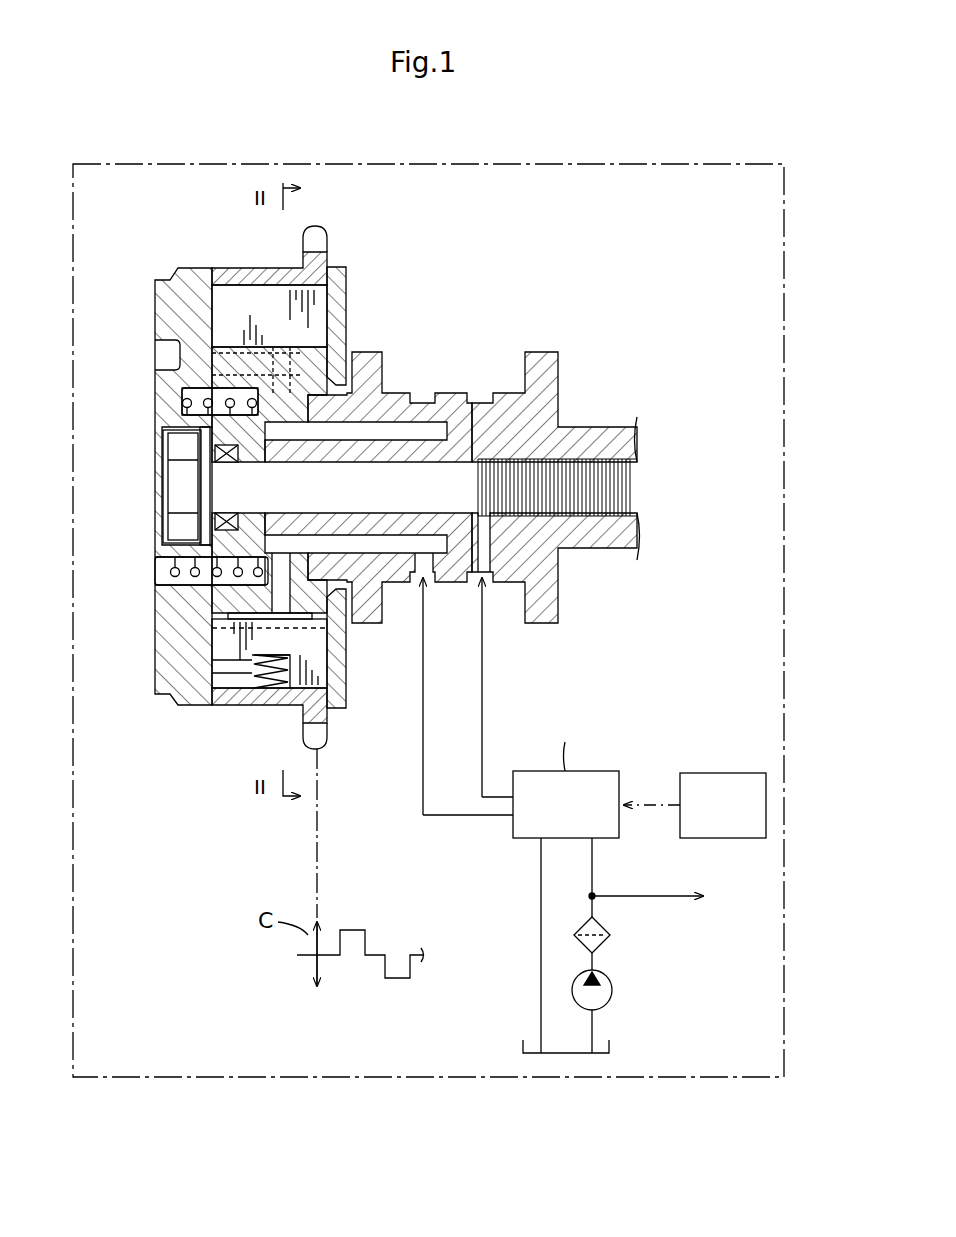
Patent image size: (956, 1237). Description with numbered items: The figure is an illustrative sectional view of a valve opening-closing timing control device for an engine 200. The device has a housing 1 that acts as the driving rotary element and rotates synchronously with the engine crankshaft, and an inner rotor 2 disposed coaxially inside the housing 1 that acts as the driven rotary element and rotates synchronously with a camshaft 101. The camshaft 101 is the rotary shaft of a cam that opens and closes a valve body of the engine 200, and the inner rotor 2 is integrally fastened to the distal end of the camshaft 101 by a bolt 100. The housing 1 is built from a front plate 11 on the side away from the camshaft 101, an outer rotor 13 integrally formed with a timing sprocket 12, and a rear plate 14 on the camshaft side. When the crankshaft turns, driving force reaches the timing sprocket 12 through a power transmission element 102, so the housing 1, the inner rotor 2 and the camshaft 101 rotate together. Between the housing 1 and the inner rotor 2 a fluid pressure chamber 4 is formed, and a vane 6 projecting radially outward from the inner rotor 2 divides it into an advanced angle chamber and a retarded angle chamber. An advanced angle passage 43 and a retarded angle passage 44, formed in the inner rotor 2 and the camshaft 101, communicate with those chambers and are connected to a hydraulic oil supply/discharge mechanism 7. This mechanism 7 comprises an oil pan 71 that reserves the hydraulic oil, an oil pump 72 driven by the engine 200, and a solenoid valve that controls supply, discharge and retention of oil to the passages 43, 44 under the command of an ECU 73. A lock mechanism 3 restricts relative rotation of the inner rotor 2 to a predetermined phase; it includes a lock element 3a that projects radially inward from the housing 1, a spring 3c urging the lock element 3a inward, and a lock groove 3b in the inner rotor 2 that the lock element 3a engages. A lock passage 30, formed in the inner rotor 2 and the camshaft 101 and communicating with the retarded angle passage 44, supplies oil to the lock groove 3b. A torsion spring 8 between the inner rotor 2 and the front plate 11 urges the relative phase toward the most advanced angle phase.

The engine 200 is at (480, 163).
The housing 1 is at (253, 480).
The front plate 11 is at (155, 300).
The outer rotor 13 is at (246, 268).
The timing sprocket 12 is at (322, 232).
The rear plate 14 is at (346, 272).
The vane 6 is at (315, 305).
The inner rotor 2 is at (295, 416).
The fluid pressure chamber 4 is at (227, 305).
The torsion spring 8 is at (182, 404).
The camshaft 101 is at (590, 428).
The bolt 100 is at (170, 500).
The advanced angle passage 43 is at (488, 672).
The retarded angle passage 44 is at (418, 672).
The lock passage 30 is at (218, 580).
The lock mechanism 3 is at (219, 687).
The lock element 3a is at (220, 657).
The lock groove 3b is at (225, 637).
The spring 3c is at (262, 688).
The hydraulic oil supply/discharge mechanism 7 is at (618, 860).
The ECU 73 is at (723, 773).
The oil pump 72 is at (612, 988).
The oil pan 71 is at (521, 1050).
The power transmission element 102 is at (315, 822).